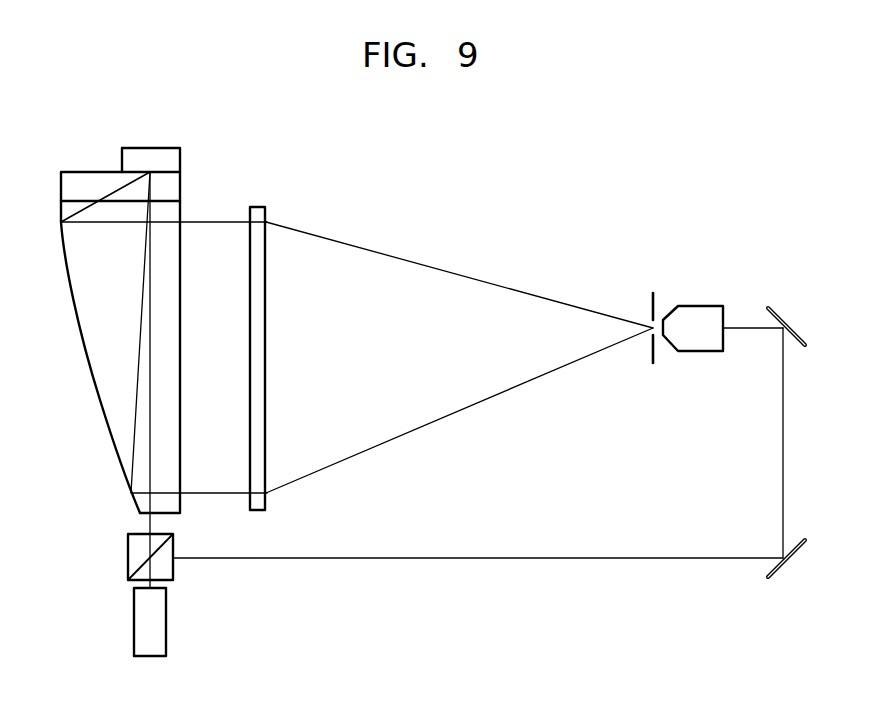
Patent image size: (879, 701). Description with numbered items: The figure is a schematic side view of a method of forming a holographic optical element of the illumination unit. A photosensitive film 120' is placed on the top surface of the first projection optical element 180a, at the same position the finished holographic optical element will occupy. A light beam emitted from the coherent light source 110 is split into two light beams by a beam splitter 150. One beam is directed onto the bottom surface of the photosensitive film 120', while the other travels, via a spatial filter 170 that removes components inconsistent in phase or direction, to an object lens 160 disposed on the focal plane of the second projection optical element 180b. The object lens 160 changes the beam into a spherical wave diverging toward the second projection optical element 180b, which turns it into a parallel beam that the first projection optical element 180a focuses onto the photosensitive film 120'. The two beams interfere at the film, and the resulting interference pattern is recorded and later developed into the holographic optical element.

The coherent light source 110 is at (134, 620).
The photosensitive film 120' is at (148, 315).
The beam splitter 150 is at (128, 557).
The object lens 160 is at (700, 305).
The spatial filter 170 is at (651, 299).
The first projection optical element 180a is at (82, 350).
The second projection optical element 180b is at (258, 206).